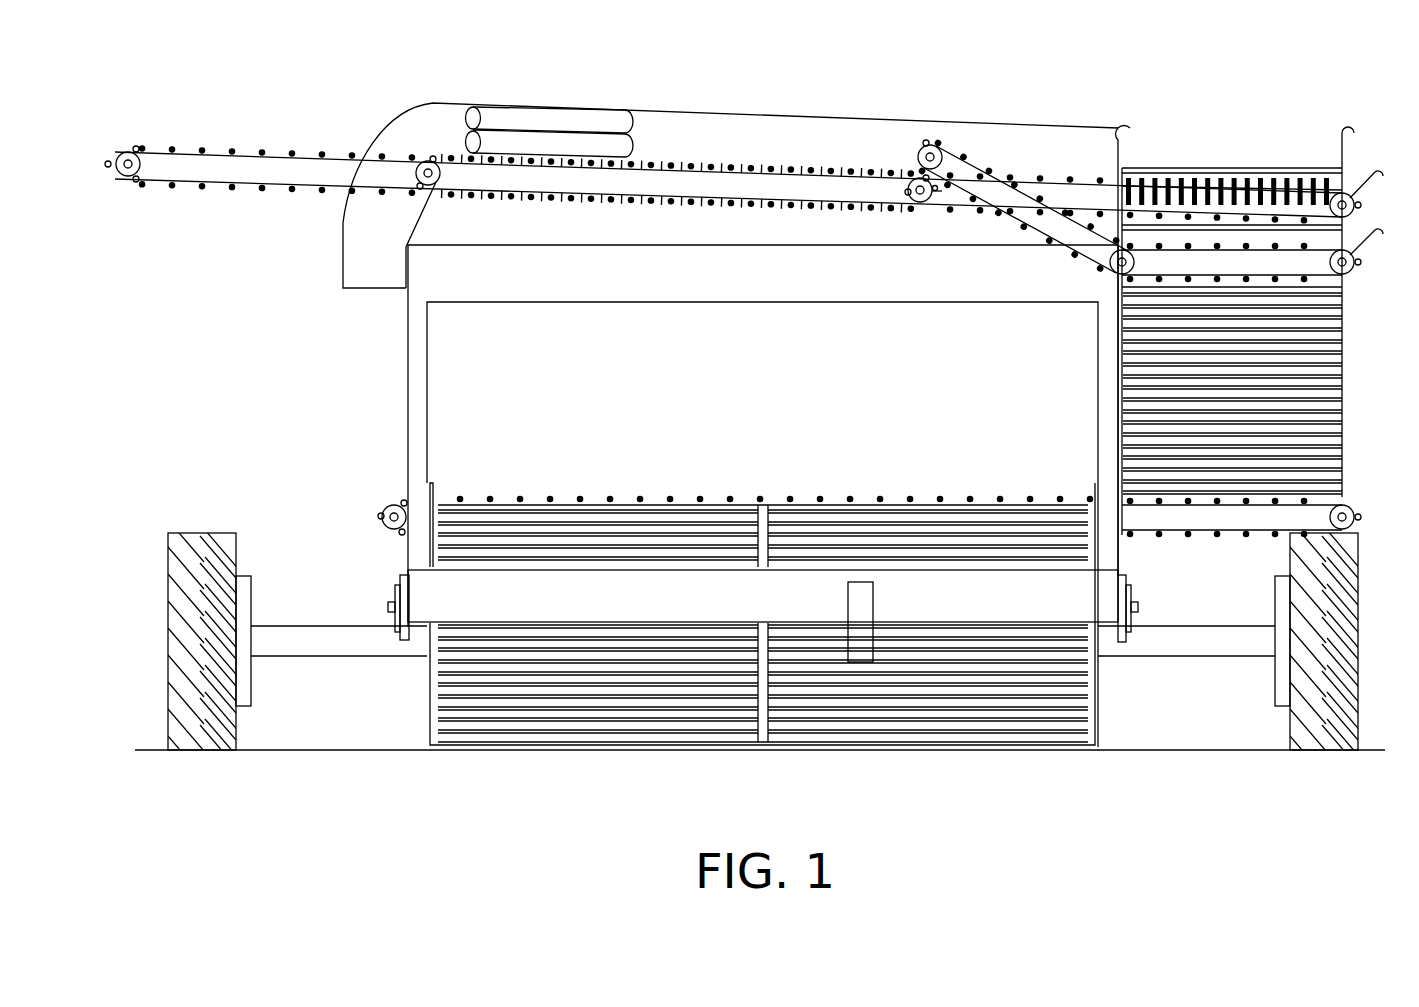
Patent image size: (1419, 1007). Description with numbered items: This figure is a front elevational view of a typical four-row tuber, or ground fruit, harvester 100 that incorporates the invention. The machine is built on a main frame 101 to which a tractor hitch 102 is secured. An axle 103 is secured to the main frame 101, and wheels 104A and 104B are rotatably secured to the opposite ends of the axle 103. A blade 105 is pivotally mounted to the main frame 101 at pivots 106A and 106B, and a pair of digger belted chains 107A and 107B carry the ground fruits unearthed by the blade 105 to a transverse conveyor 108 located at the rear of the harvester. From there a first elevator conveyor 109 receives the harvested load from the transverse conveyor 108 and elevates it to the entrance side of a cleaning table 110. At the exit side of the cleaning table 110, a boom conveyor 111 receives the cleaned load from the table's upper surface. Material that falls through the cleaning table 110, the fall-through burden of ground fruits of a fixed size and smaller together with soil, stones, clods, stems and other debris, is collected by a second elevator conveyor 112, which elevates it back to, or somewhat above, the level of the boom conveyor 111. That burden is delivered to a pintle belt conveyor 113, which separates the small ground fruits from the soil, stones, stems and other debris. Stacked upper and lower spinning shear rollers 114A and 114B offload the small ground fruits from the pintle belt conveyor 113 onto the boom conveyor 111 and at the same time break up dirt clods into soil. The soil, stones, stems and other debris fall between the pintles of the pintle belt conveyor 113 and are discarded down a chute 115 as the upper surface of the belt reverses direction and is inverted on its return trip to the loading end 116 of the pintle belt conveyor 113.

The tuber harvester 100 is at (350, 82).
The main frame 101 is at (420, 372).
The tractor hitch 102 is at (858, 595).
The axle 103 is at (355, 642).
The wheel 104A is at (210, 540).
The wheel 104B is at (1337, 740).
The blade 105 is at (575, 745).
The pivot 106A is at (395, 590).
The pivot 106B is at (1128, 590).
The digger belted chain 107A is at (658, 722).
The digger belted chain 107B is at (922, 722).
The transverse conveyor 108 is at (680, 497).
The first elevator conveyor 109 is at (1322, 360).
The cleaning table 110 is at (1272, 173).
The boom conveyor 111 is at (270, 151).
The second elevator conveyor 112 is at (968, 151).
The pintle belt conveyor 113 is at (738, 165).
The upper spinning shear roller 114A is at (570, 122).
The lower spinning shear roller 114B is at (522, 140).
The chute 115 is at (355, 260).
The loading end 116 is at (908, 168).